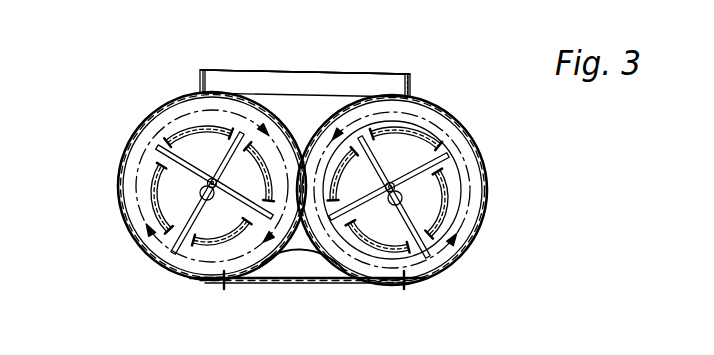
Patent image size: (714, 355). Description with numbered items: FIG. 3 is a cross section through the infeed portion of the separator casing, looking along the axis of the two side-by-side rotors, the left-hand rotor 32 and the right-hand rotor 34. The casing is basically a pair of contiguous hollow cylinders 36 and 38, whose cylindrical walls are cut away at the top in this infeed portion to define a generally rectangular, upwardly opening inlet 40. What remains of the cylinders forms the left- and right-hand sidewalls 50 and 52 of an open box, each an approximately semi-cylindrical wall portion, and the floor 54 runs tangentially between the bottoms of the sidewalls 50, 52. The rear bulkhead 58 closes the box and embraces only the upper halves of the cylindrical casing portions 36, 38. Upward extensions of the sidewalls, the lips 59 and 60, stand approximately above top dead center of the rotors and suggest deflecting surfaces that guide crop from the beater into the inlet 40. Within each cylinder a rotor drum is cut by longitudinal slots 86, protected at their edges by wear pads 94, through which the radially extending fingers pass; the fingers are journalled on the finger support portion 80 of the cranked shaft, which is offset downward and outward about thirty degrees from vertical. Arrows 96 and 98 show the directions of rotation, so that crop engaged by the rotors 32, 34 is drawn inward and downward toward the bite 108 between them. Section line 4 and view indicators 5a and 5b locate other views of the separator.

The left-hand rotor 32 is at (405, 284).
The right-hand rotor 34 is at (225, 284).
The hollow cylinder 36 is at (387, 94).
The hollow cylinder 38 is at (222, 93).
The inlet 40 is at (343, 52).
The left-hand sidewall 50 is at (462, 247).
The right-hand sidewall 52 is at (163, 252).
The floor 54 is at (304, 281).
The rear bulkhead 58 is at (259, 70).
The lip 59 is at (411, 93).
The lip 60 is at (202, 88).
The finger support portion 80 is at (215, 193).
The slot 86 is at (374, 135).
The wear pad 94 is at (374, 150).
The arrow 96 is at (354, 126).
The arrow 98 is at (258, 124).
The bite 108 is at (302, 147).
The section line 4- 4 is at (100, 180).
The section line 5a is at (273, 88).
The section line 5b is at (113, 128).